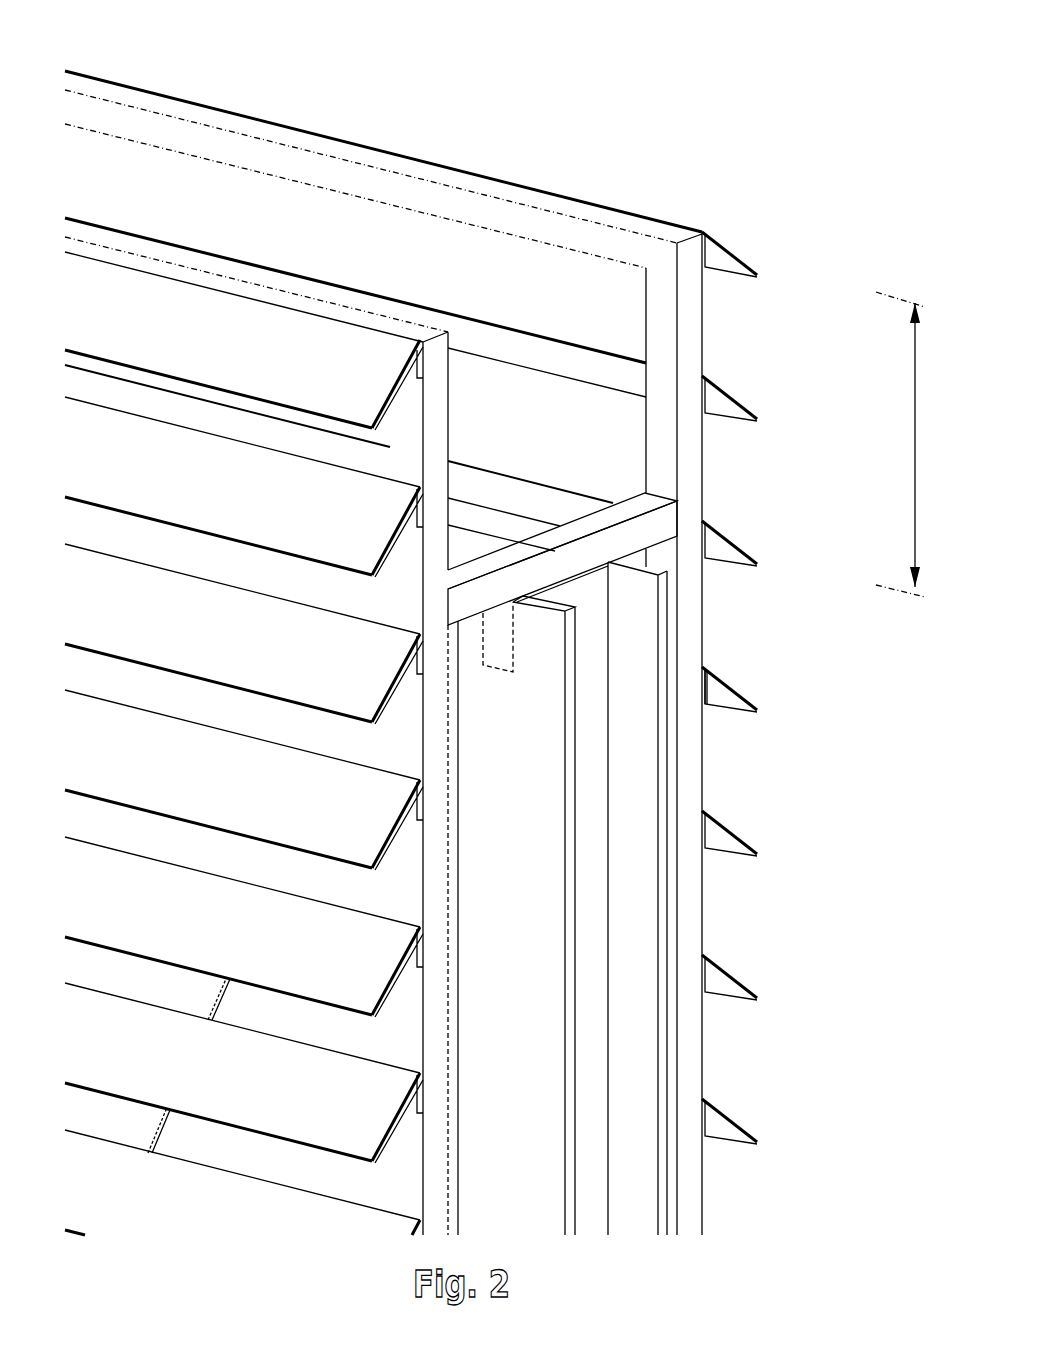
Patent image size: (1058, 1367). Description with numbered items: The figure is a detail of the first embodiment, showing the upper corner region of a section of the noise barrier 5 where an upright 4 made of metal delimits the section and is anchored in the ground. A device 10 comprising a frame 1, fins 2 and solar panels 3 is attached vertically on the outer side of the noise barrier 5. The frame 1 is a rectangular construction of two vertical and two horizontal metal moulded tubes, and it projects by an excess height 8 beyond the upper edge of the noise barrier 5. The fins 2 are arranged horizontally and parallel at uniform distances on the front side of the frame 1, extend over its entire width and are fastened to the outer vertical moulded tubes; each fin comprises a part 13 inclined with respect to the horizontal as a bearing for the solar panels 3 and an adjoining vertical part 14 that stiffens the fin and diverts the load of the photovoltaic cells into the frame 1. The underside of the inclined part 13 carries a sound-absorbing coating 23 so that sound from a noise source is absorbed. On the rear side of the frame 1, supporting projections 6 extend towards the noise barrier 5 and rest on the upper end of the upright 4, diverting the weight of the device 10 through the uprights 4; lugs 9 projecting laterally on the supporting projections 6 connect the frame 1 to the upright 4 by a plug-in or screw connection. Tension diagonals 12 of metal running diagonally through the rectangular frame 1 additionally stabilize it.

The frame 1 is at (423, 340).
The fins 2 is at (745, 268).
The solar panels 3 is at (258, 495).
The upright 4 is at (637, 598).
The noise barrier 5 is at (313, 1018).
The supporting projections 6 is at (495, 562).
The excess height 8 is at (906, 444).
The lugs 9 is at (506, 628).
The device 10 is at (537, 553).
The tension diagonals 12 is at (225, 1000).
The part inclined with respect to the horizontal 13 is at (750, 715).
The vertical part 14 is at (707, 703).
The sound-absorbing coating 23 is at (710, 850).